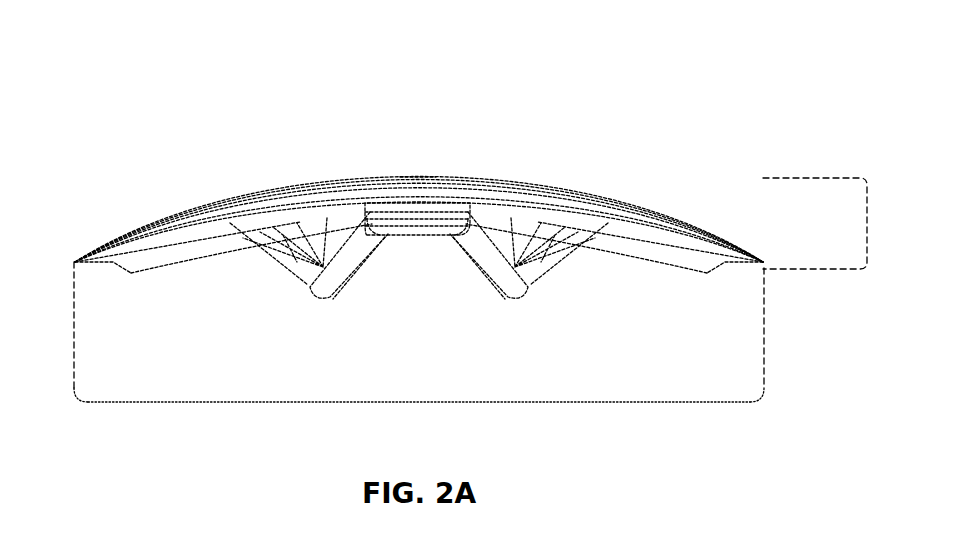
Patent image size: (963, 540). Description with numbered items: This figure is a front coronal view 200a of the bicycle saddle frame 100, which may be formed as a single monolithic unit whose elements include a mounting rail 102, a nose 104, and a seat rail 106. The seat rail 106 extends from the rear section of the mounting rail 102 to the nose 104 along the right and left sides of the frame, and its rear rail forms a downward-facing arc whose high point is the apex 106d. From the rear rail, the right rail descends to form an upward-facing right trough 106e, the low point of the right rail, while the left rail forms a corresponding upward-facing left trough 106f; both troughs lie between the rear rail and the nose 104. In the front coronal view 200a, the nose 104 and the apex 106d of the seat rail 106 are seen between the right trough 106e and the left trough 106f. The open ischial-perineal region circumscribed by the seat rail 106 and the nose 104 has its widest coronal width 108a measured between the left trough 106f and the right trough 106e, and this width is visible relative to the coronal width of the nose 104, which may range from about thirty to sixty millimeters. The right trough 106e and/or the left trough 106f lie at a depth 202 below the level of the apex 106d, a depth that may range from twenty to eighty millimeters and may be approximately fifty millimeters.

The bicycle saddle frame 100 is at (66, 47).
The mounting rail 102 is at (273, 292).
The nose 104 is at (418, 258).
The seat rail 106 is at (101, 209).
The apex 106d is at (418, 232).
The right trough 106e is at (80, 265).
The left trough 106f is at (758, 265).
The widest coronal width 108a is at (418, 403).
The front coronal view 200a is at (87, 448).
The depth 202 is at (868, 224).